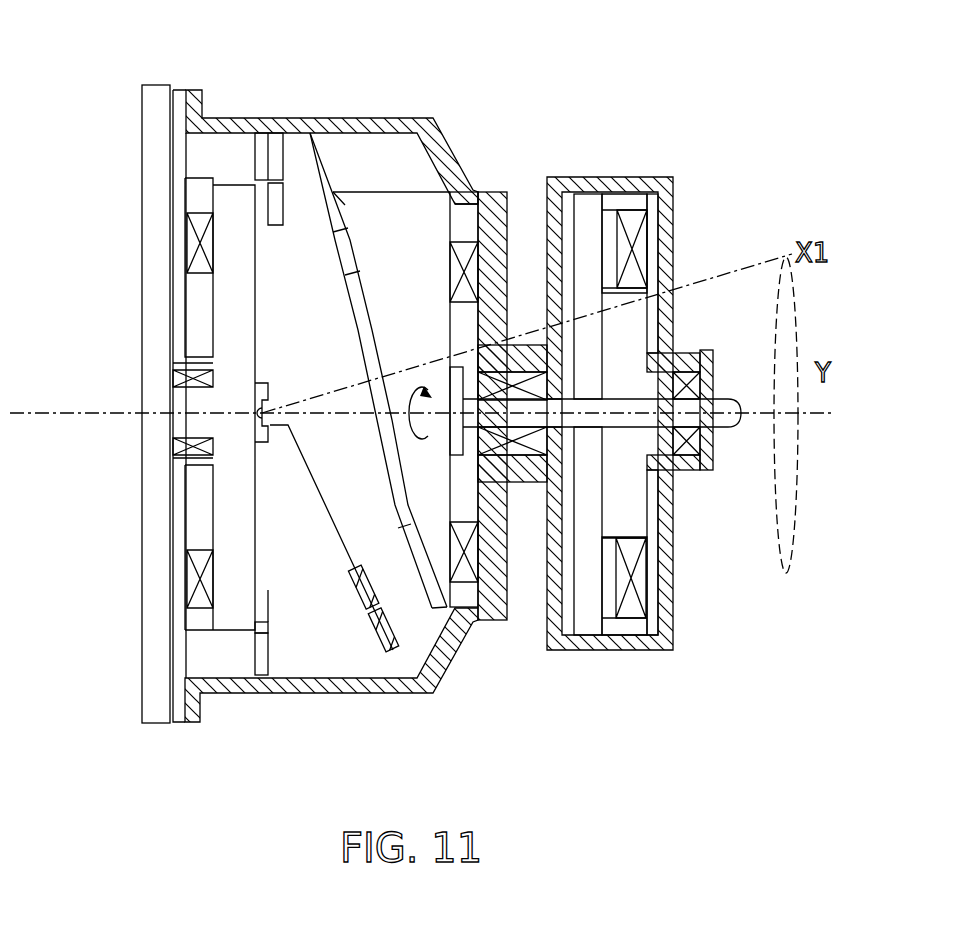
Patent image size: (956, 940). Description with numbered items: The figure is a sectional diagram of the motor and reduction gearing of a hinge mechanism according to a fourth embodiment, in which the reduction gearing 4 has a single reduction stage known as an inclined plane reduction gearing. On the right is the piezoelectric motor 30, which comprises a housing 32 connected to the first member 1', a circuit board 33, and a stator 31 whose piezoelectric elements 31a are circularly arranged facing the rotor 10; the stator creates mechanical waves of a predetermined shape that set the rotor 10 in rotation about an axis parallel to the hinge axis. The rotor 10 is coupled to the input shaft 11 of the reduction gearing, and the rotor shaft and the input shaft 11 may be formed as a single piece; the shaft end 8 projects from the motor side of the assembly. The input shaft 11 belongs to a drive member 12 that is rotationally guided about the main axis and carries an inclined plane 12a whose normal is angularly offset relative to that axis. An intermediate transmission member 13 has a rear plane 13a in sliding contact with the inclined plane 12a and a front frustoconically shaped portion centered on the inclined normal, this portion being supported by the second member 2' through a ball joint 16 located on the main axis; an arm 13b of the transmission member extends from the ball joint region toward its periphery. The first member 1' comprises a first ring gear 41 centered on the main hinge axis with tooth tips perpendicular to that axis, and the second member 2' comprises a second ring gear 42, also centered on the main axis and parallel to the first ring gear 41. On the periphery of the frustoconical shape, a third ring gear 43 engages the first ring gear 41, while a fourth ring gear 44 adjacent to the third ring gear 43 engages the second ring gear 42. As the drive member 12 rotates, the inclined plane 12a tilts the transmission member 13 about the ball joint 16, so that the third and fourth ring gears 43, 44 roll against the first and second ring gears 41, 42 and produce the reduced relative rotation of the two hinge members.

The first member 1' is at (325, 377).
The second member 2' is at (106, 404).
The reduction gearing 4 is at (455, 90).
The output shaft end 8 is at (727, 405).
The rotor 10 is at (582, 592).
The input shaft 11 is at (525, 420).
The drive member 12 is at (443, 350).
The inclined plane 12a is at (345, 205).
The intermediate transmission member 13 is at (248, 391).
The rear plane 13a is at (347, 303).
The disk arm 13b is at (338, 537).
The ball joint 16 is at (255, 408).
The piezoelectric motor 30 is at (618, 177).
The stator 31 is at (675, 408).
The piezoelectric elements 31a is at (610, 270).
The housing 32 is at (580, 178).
The circuit board 33 is at (655, 340).
The first ring gear 41 is at (258, 152).
The second ring gear 42 is at (258, 208).
The third ring gear 43 is at (278, 150).
The fourth ring gear 44 is at (280, 197).